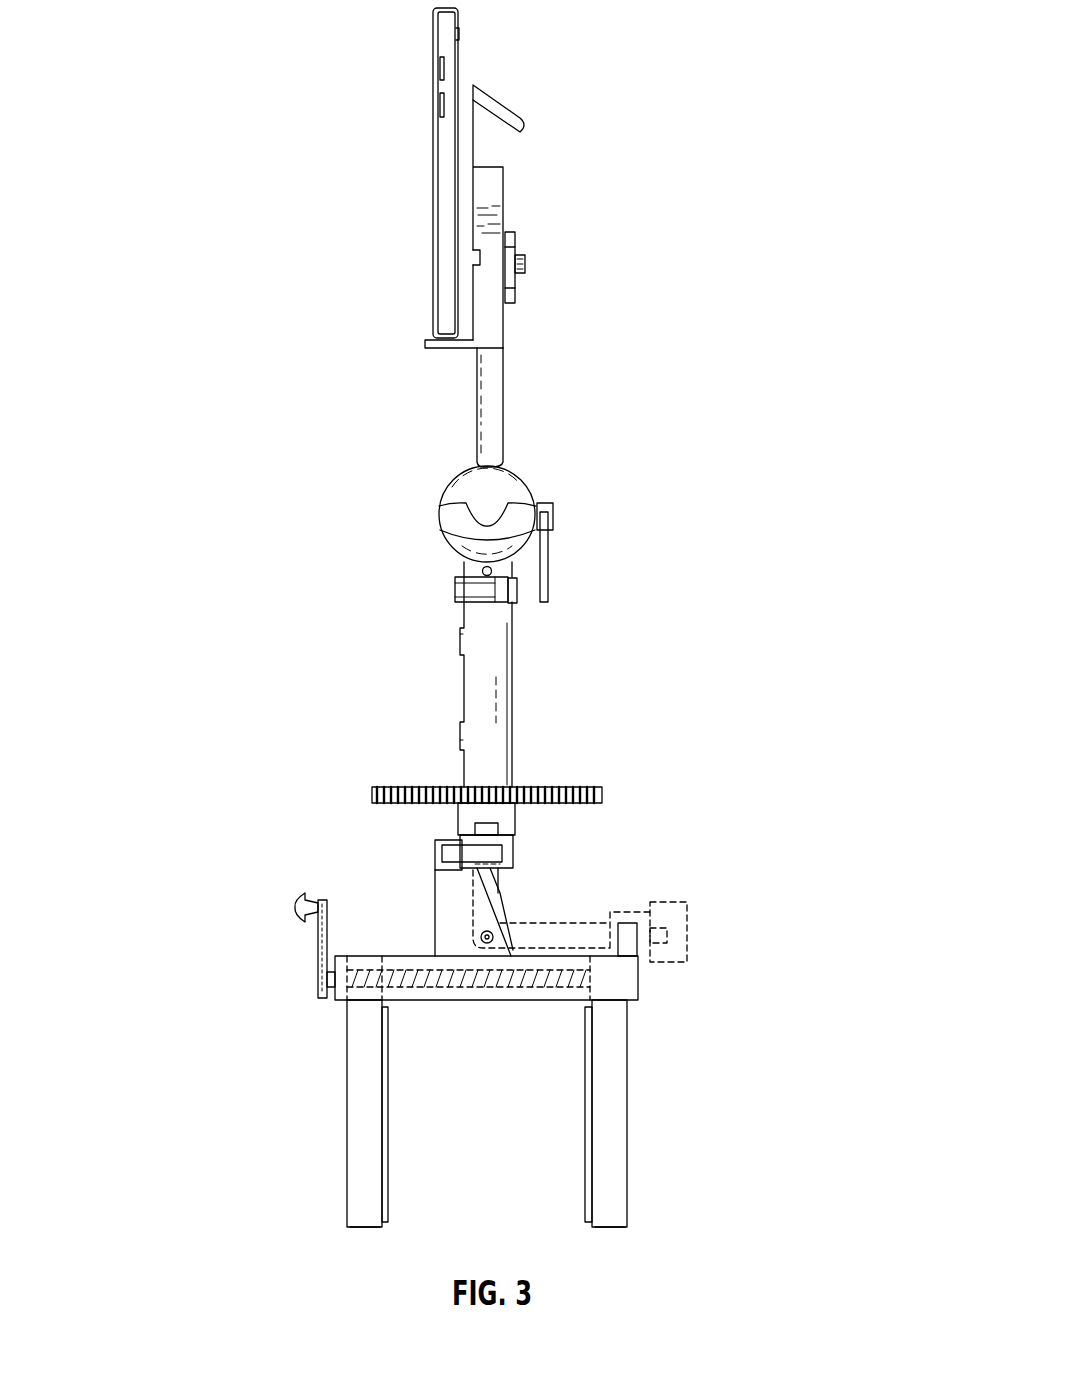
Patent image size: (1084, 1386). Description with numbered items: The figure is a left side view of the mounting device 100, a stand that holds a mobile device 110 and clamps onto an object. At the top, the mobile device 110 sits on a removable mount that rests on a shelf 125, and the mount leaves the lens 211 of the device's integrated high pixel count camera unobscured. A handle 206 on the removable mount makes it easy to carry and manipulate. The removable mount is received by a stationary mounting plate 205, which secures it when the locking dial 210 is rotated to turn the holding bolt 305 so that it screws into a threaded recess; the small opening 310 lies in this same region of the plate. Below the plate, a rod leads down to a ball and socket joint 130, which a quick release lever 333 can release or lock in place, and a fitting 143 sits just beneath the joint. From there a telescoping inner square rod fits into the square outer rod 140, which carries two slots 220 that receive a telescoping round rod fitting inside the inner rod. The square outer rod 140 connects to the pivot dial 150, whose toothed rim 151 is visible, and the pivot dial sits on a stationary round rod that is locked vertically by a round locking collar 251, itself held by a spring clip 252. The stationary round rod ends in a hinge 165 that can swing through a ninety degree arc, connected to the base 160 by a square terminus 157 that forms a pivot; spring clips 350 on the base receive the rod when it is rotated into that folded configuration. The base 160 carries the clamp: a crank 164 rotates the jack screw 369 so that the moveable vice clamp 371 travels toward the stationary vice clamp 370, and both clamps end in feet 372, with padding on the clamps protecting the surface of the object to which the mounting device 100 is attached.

The mounting device 100 is at (667, 1208).
The mobile device 110 is at (433, 57).
The shelf 125 is at (425, 343).
The ball and socket joint 130 is at (512, 470).
The square outer rod 140 is at (512, 767).
The clamp 143 is at (512, 593).
The pivot dial 150 is at (485, 778).
The gear teeth 151 is at (577, 792).
The square terminus 157 is at (513, 877).
The base 160 is at (630, 990).
The crank 164 is at (318, 988).
The hinge 165 is at (543, 913).
The stationary mounting plate 205 is at (503, 187).
The handle 206 is at (503, 110).
The locking dial 210 is at (515, 235).
The lens 211 is at (459, 34).
The slots 220 is at (462, 642).
The round locking collar 251 is at (498, 830).
The spring clip 252 is at (443, 853).
The holding bolt 305 is at (525, 265).
The slot 310 is at (480, 257).
The quick release lever 333 is at (548, 574).
The spring clips 350 is at (672, 940).
The jack screw 369 is at (490, 988).
The stationary vice clamp 370 is at (627, 1100).
The moveable vice clamp 371 is at (347, 1137).
The foot 372 is at (365, 1228).